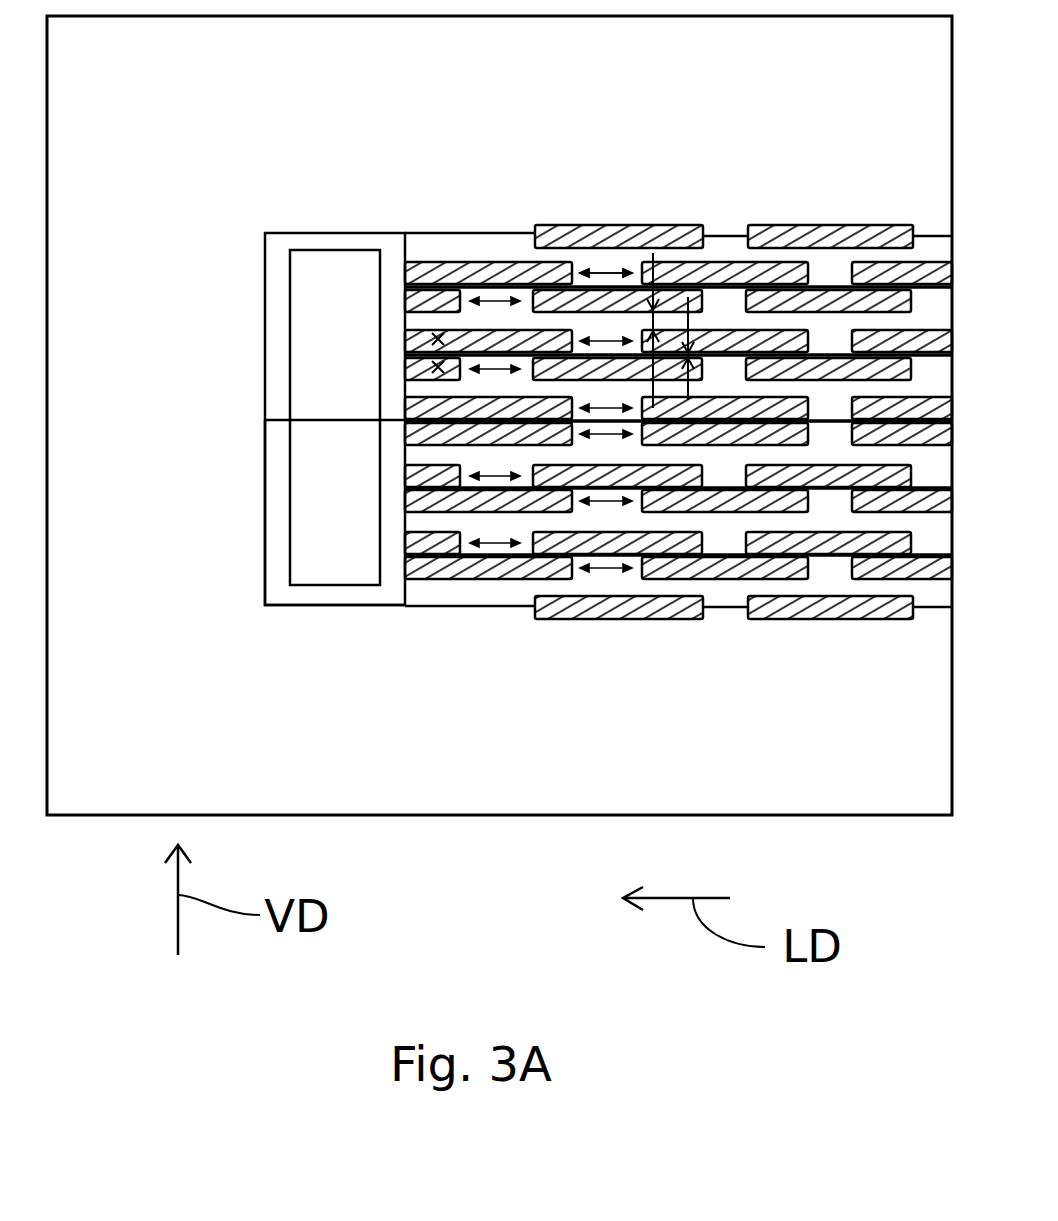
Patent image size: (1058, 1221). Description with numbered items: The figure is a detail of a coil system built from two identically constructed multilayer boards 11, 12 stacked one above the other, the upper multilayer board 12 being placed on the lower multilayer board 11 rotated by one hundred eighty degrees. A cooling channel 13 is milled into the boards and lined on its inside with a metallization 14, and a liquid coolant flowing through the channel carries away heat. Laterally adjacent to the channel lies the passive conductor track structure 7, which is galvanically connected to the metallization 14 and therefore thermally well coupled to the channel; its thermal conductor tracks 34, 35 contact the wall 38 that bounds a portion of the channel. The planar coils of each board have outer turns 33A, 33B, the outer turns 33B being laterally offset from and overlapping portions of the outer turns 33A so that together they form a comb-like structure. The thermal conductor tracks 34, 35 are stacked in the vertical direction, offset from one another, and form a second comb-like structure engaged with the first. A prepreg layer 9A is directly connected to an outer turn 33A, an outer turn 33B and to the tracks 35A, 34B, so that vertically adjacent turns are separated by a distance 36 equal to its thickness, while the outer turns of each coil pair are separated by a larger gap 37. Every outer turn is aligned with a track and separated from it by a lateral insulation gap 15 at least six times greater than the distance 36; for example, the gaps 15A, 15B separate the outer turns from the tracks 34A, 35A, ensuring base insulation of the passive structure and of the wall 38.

The passive conductor track structure 7 is at (447, 242).
The prepreg layer 9A is at (827, 347).
The lower multilayer board 11 is at (257, 500).
The upper multilayer board 12 is at (258, 347).
The cooling channel 13 is at (325, 272).
The metallization 14 is at (383, 242).
The gap 15 is at (612, 268).
The gap 15A is at (608, 408).
The gap 15B is at (438, 318).
The outer turn 33A is at (732, 408).
The outer turn 33B is at (545, 293).
The thermal conductor track 34 is at (415, 435).
The thermal conductor track 34A is at (415, 405).
The thermal conductor track 34B is at (415, 340).
The thermal conductor track 35 is at (415, 478).
The thermal conductor track 35A is at (415, 362).
The distance 36 is at (690, 312).
The gap 37 is at (655, 283).
The wall 38 is at (360, 242).